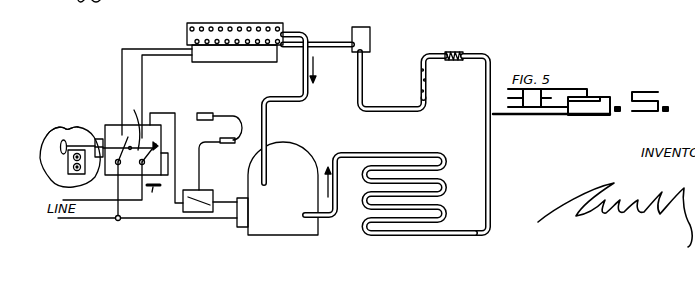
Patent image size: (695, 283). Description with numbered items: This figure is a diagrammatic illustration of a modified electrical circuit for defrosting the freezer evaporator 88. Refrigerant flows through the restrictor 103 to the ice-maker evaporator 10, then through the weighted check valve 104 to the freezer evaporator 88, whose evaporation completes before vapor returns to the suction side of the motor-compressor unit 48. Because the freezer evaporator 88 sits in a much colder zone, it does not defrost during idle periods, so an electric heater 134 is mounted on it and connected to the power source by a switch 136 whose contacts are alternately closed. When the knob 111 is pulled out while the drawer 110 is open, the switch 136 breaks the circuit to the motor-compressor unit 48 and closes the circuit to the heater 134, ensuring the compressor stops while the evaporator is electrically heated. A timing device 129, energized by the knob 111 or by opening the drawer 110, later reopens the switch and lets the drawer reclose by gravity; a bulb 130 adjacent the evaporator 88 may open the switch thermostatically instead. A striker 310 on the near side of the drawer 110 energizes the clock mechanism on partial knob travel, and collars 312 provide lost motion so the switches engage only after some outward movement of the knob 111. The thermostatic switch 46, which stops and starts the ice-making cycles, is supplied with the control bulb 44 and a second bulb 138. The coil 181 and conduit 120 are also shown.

The freezer evaporator 88 is at (252, 23).
The electric heater 134 is at (234, 54).
The weighted check valve 104 is at (372, 28).
The restrictor 103 is at (460, 53).
The ice-maker evaporator 10 is at (428, 77).
The motor-compressor unit 48 is at (277, 188).
The evaporator coil 181 is at (390, 194).
The conduit 120 is at (328, 222).
The thermostatic switch 46 is at (180, 213).
The bulb 130 is at (155, 192).
The switch 136 is at (107, 177).
The striker 310 is at (58, 182).
The drawer 110 is at (51, 129).
The knob 111 is at (68, 129).
The timing device 129 is at (99, 138).
The collars 312 is at (168, 104).
The bulb 138 is at (209, 113).
The control bulb 44 is at (223, 137).